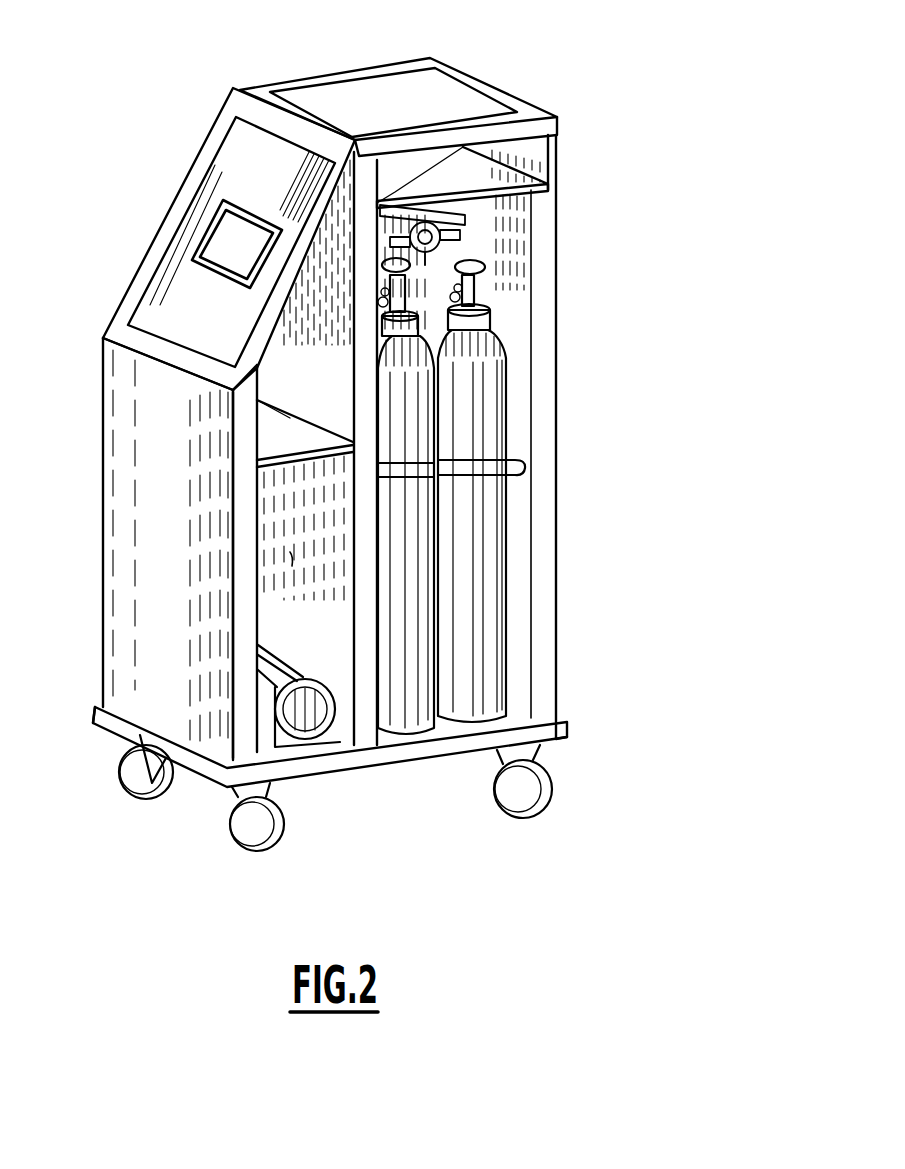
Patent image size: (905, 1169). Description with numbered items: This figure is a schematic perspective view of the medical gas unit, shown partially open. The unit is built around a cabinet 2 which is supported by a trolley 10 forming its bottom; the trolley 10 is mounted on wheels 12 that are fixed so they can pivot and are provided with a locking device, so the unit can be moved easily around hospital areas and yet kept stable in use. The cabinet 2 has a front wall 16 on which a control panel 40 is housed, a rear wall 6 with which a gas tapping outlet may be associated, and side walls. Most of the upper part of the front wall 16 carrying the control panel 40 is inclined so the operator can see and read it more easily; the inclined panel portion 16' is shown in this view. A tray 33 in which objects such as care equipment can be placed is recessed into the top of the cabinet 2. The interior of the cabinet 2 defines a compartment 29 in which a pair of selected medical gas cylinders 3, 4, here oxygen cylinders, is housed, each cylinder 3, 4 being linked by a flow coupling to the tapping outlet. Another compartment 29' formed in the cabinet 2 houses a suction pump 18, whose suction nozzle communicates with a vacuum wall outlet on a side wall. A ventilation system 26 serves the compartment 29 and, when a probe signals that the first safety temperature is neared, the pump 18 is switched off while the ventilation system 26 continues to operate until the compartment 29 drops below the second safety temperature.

The cabinet 2 is at (205, 422).
The medical gas cylinder 3 is at (420, 537).
The medical gas cylinder 4 is at (483, 538).
The rear wall 6 is at (556, 536).
The trolley 10 is at (390, 752).
The wheels 12 is at (260, 830).
The front wall 16 is at (197, 460).
The sloped front panel 16' is at (229, 232).
The suction pump 18 is at (297, 717).
The ventilation system 26 is at (208, 763).
The compartment 29 is at (503, 264).
The another compartment 29' is at (169, 588).
The tray 33 is at (405, 108).
The control panel 40 is at (225, 257).